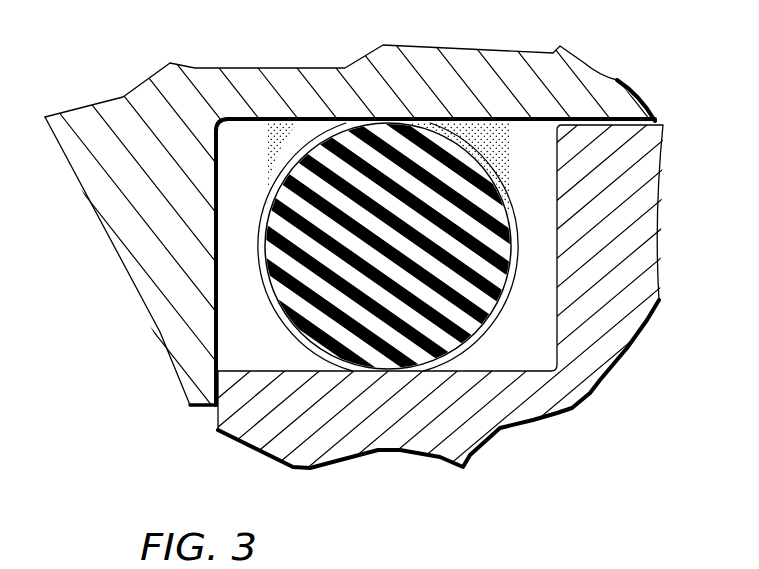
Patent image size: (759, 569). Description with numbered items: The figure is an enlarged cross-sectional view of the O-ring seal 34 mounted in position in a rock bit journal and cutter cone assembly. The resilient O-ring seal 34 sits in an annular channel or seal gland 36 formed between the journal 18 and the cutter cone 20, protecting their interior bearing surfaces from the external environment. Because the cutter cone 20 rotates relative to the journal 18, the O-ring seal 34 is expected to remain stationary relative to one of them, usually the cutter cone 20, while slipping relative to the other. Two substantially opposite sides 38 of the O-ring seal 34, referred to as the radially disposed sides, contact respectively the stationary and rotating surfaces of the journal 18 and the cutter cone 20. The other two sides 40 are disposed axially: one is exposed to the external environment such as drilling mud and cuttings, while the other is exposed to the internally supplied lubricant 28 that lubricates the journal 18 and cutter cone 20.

The journal 18 is at (262, 97).
The cutter cone 20 is at (553, 400).
The lubricant 28 is at (537, 177).
The O-ring seal 34 is at (333, 230).
The seal gland 36 is at (260, 342).
The radially disposed sides 38 is at (386, 119).
The axially disposed sides 40 is at (270, 285).